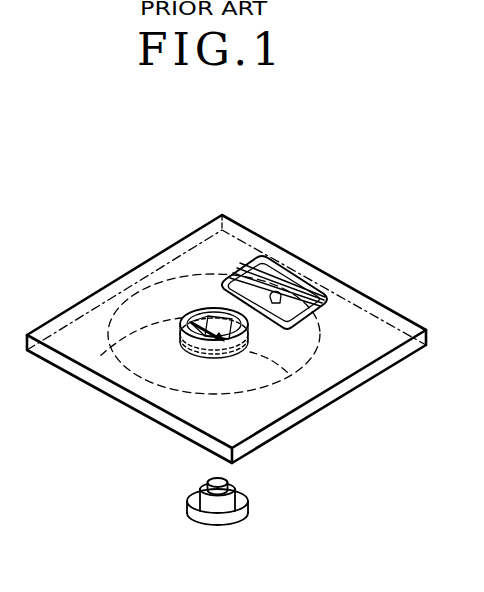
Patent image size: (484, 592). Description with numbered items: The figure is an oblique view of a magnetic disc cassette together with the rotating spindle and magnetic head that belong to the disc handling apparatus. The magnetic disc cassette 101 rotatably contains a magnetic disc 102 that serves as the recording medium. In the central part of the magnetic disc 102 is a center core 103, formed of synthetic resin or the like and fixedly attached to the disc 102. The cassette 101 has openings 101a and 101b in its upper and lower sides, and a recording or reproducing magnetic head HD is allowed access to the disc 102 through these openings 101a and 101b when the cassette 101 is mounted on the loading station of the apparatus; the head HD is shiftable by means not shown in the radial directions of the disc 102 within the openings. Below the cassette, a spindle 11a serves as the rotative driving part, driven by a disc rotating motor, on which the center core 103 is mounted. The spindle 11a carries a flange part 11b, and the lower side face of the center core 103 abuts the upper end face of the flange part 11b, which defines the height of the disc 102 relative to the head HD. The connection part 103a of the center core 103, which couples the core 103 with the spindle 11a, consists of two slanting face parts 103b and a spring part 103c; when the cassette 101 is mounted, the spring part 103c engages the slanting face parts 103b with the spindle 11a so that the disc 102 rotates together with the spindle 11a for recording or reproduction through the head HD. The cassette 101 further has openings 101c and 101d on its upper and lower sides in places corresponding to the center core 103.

The magnetic disc cassette 101 is at (370, 324).
The opening 101a is at (313, 350).
The opening 101b is at (258, 303).
The opening 101c is at (218, 283).
The opening 101d is at (290, 375).
The magnetic disc 102 is at (262, 264).
The center core 103 is at (205, 348).
The connection part 103a is at (200, 320).
The slanting face parts 103b is at (213, 313).
The spring part 103c is at (223, 342).
The magnetic head HD is at (283, 300).
The spindle 11a is at (232, 484).
The flange part 11b is at (193, 498).